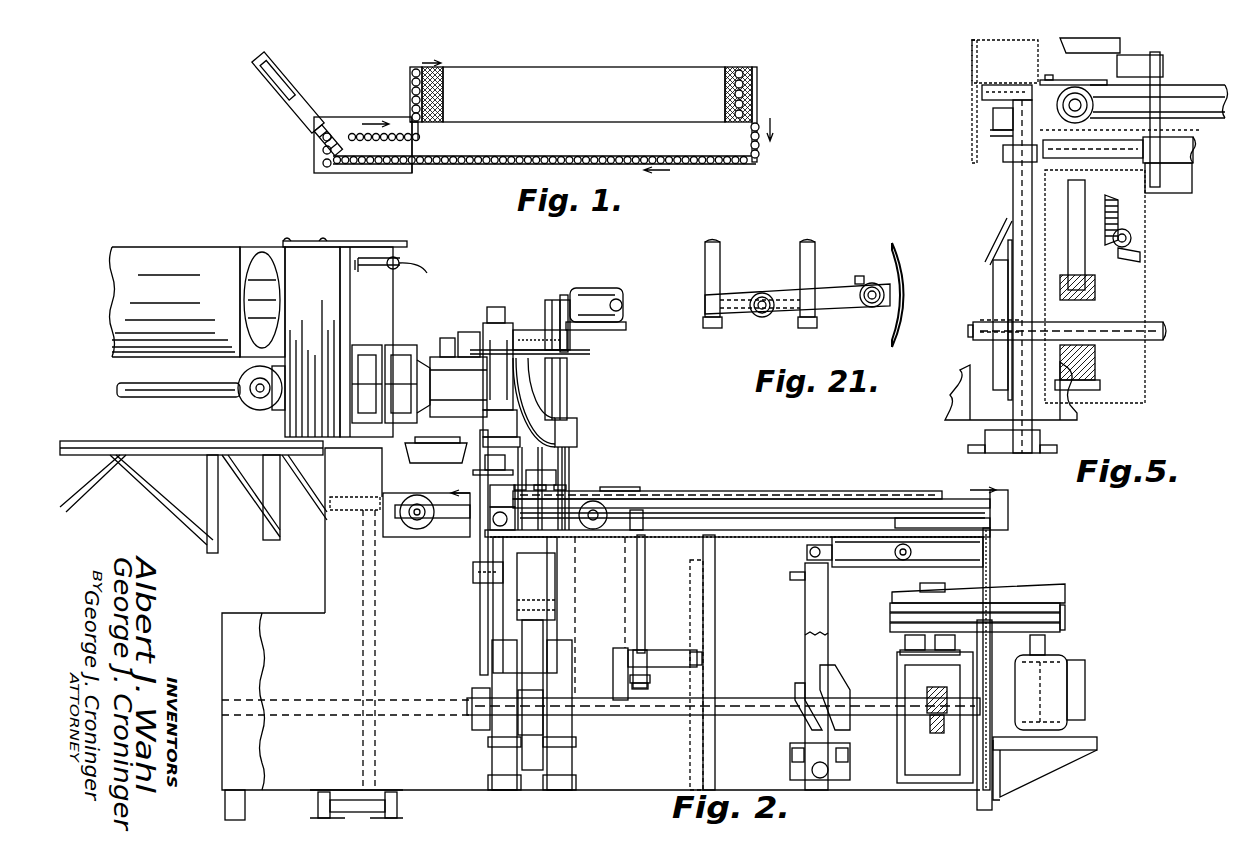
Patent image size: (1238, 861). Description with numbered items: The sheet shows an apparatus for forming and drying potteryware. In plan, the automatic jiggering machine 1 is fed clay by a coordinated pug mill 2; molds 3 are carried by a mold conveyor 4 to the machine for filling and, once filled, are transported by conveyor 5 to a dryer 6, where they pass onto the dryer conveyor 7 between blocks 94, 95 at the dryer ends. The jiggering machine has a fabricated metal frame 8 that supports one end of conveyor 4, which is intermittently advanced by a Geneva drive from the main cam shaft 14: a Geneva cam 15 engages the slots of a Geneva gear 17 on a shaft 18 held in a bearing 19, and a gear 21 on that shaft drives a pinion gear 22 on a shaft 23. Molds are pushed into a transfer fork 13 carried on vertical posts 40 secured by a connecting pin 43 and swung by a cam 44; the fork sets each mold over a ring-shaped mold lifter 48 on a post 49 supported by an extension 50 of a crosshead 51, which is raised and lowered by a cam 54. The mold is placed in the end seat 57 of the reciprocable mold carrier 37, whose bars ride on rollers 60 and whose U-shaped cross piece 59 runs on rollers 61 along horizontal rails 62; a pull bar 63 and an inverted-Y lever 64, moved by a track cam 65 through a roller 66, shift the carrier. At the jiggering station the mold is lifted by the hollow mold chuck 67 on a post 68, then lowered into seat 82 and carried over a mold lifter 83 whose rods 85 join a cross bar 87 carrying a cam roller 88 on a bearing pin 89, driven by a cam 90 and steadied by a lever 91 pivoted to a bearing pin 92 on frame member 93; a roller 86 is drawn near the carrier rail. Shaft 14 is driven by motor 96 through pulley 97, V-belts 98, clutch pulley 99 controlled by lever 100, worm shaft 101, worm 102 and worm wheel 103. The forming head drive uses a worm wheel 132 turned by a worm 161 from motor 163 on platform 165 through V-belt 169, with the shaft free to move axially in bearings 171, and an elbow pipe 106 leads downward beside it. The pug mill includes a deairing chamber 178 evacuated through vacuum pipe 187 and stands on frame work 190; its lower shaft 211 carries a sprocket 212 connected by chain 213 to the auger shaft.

In FIG. 1, the automatic jiggering machine 1 is at (296, 155).
In FIG. 1, the pug mill 2 is at (300, 52).
In FIG. 2, the pug mill 2 is at (190, 245).
In FIG. 1, the molds 3 is at (420, 165).
In FIG. 1, the mold conveyor 4 is at (490, 158).
In FIG. 2, the mold conveyor 4 is at (410, 528).
In FIG. 1, the conveyor 5 is at (424, 137).
In FIG. 2, the conveyor 5 is at (968, 490).
In FIG. 1, the dryer 6 is at (500, 70).
In FIG. 1, the dryer conveyor 7 is at (411, 67).
In FIG. 1, the brush block 94 is at (411, 100).
In FIG. 1, the brush block 95 is at (760, 76).
In FIG. 2, the frame 8 is at (600, 790).
In FIG. 5, the transfer fork 13 is at (1065, 80).
In FIG. 2, the transfer fork 13 is at (428, 478).
In FIG. 5, the main cam shaft 14 is at (1163, 330).
In FIG. 2, the main cam shaft 14 is at (738, 698).
In FIG. 5, the Geneva cam 15 is at (1092, 350).
In FIG. 5, the Geneva gear 17 is at (1082, 190).
In FIG. 5, the shaft 18 is at (1000, 268).
In FIG. 5, the bearing 19 is at (998, 240).
In FIG. 5, the gear 21 is at (1120, 208).
In FIG. 5, the pinion gear 22 is at (1135, 258).
In FIG. 5, the shaft 23 is at (1132, 238).
In FIG. 2, the mold carrier 37 is at (794, 484).
In FIG. 5, the vertical posts 40 is at (1013, 193).
In FIG. 2, the vertical posts 40 is at (366, 578).
In FIG. 5, the connecting pin 43 is at (1015, 85).
In FIG. 2, the connecting pin 43 is at (352, 511).
In FIG. 5, the cam 44 is at (1002, 305).
In FIG. 5, the mold lifter 48 is at (1110, 40).
In FIG. 2, the mold lifter 48 is at (440, 447).
In FIG. 5, the post 49 is at (1160, 70).
In FIG. 2, the extension 50 is at (470, 580).
In FIG. 2, the crosshead 51 is at (548, 590).
In FIG. 2, the cam 54 is at (525, 653).
In FIG. 2, the end seat 57 is at (550, 475).
In FIG. 2, the U-shaped cross piece 59 is at (990, 540).
In FIG. 2, the rollers 60 is at (482, 538).
In FIG. 2, the rollers 61 is at (893, 560).
In FIG. 2, the horizontal rails 62 is at (990, 565).
In FIG. 2, the pull bar 63 is at (855, 562).
In FIG. 2, the lever 64 is at (805, 597).
In FIG. 2, the track cam 65 is at (860, 658).
In FIG. 2, the roller 66 is at (800, 680).
In FIG. 2, the mold chuck 67 is at (555, 450).
In FIG. 2, the post 68 is at (530, 600).
In FIG. 2, the seat 82 is at (640, 486).
In FIG. 2, the mold lifter 83 is at (625, 545).
In FIG. 21, the rods 85 is at (808, 245).
In FIG. 2, the rods 85 is at (646, 562).
In FIG. 2, the roller 86 is at (643, 512).
In FIG. 21, the cross bar 87 is at (728, 300).
In FIG. 2, the cross bar 87 is at (641, 650).
In FIG. 21, the cam roller 88 is at (745, 318).
In FIG. 2, the cam roller 88 is at (628, 636).
In FIG. 21, the bearing pin 89 is at (770, 316).
In FIG. 2, the bearing pin 89 is at (645, 672).
In FIG. 2, the cam 90 is at (613, 677).
In FIG. 21, the lever 91 is at (800, 290).
In FIG. 2, the lever 91 is at (645, 652).
In FIG. 21, the bearing pin 92 is at (872, 308).
In FIG. 2, the bearing pin 92 is at (703, 655).
In FIG. 2, the machine frame member 93 is at (716, 562).
In FIG. 2, the motor 96 is at (1072, 655).
In FIG. 2, the pulley 97 is at (1066, 618).
In FIG. 2, the V-belts 98 is at (1066, 593).
In FIG. 2, the pulley 99 is at (890, 628).
In FIG. 2, the lever 100 is at (1030, 590).
In FIG. 2, the worm shaft 101 is at (905, 668).
In FIG. 2, the worm 102 is at (947, 715).
In FIG. 2, the worm wheel 103 is at (927, 728).
In FIG. 2, the elbow pipe 106 is at (555, 392).
In FIG. 2, the worm wheel 132 is at (540, 330).
In FIG. 2, the worm 161 is at (525, 320).
In FIG. 2, the motor 163 is at (612, 278).
In FIG. 2, the platform 165 is at (590, 353).
In FIG. 2, the V-belt 169 is at (555, 325).
In FIG. 2, the bearings 171 is at (572, 365).
In FIG. 2, the deairing chamber 178 is at (318, 247).
In FIG. 2, the vacuum pipe 187 is at (428, 268).
In FIG. 2, the frame work 190 is at (90, 496).
In FIG. 2, the shaft 211 is at (163, 398).
In FIG. 2, the sprocket 212 is at (258, 405).
In FIG. 2, the chain 213 is at (278, 410).